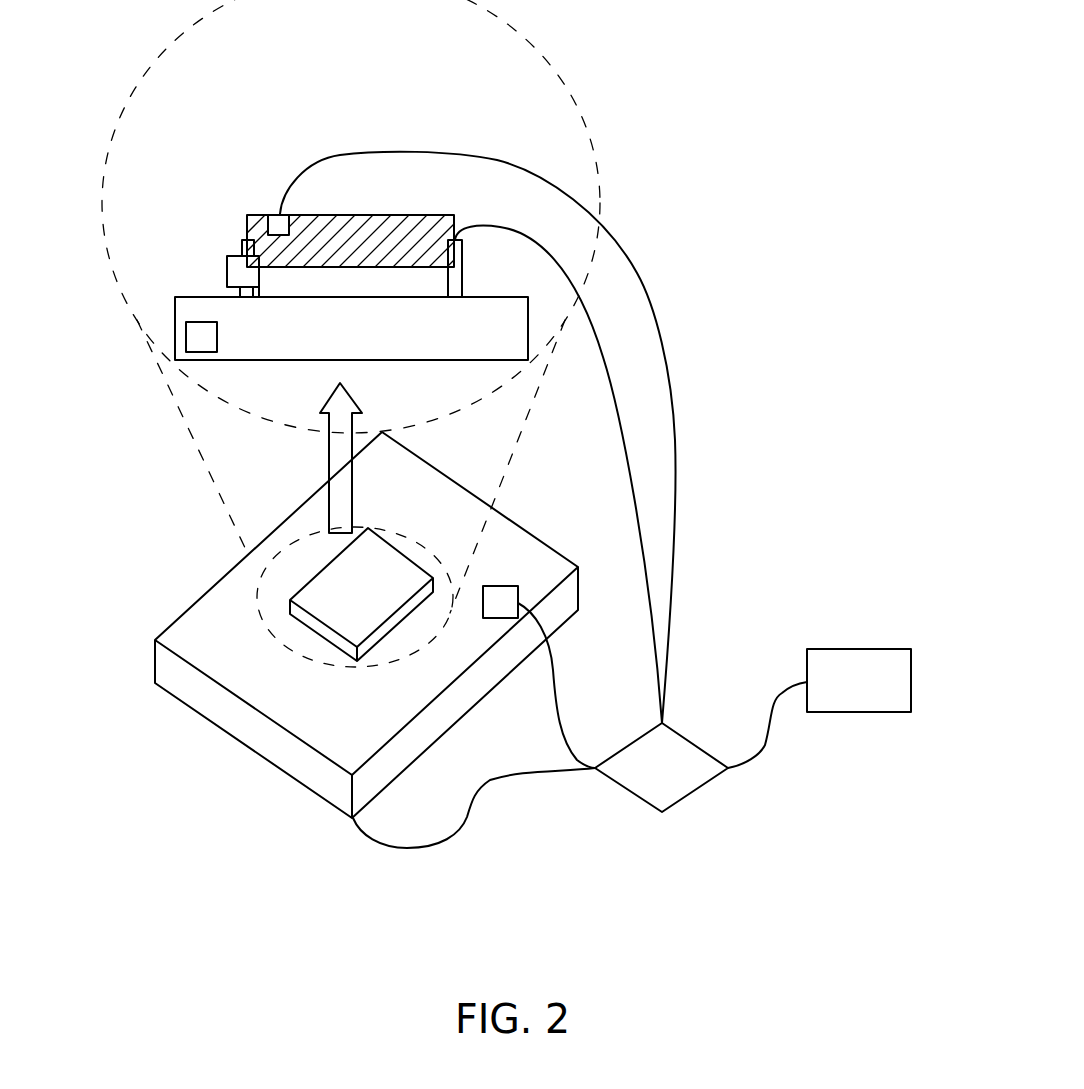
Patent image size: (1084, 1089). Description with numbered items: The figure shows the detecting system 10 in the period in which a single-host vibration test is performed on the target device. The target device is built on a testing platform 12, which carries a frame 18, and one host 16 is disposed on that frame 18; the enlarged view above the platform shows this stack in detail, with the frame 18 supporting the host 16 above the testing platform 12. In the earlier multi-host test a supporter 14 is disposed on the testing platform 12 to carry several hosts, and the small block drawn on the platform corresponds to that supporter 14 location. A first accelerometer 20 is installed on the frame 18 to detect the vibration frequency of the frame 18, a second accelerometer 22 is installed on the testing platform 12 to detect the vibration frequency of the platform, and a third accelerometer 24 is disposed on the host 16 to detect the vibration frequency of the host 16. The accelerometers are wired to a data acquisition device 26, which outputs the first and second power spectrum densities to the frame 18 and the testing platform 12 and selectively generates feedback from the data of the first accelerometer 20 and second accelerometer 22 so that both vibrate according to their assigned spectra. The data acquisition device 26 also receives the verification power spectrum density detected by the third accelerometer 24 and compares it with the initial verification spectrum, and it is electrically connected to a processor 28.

The detecting system 10 is at (767, 430).
The testing platform 12 is at (373, 343).
The supporter 14 is at (361, 594).
The host 16 is at (373, 250).
The frame 18 is at (457, 279).
The first accelerometer 20 is at (238, 268).
The second accelerometer 22 is at (200, 328).
The third accelerometer 24 is at (277, 217).
The data acquisition device 26 is at (698, 793).
The processor 28 is at (856, 649).